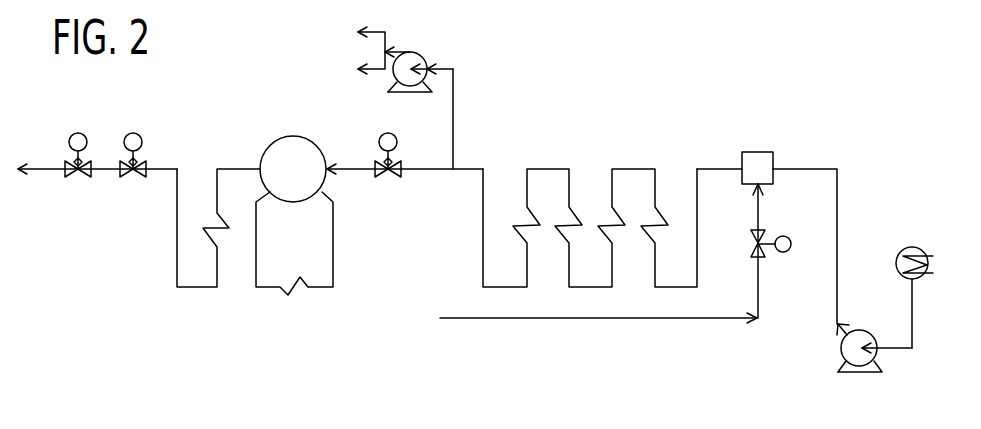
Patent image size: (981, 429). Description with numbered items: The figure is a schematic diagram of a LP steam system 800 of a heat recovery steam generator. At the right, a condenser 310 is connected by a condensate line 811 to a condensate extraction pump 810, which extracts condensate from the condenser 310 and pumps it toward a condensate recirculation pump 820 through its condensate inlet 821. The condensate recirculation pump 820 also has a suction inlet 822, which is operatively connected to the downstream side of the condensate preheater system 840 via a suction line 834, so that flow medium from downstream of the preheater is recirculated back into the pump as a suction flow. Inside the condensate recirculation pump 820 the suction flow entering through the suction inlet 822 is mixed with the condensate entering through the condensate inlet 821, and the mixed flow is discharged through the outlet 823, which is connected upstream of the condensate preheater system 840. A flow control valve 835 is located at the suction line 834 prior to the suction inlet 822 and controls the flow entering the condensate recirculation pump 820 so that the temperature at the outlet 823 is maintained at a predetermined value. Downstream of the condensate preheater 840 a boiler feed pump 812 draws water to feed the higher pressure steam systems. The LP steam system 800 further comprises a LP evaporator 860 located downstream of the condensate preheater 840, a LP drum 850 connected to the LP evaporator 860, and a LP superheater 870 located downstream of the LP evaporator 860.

The LP steam system 800 is at (723, 51).
The condensate extraction pump 810 is at (859, 330).
The condensate line 811 is at (912, 313).
The boiler feed pump 812 is at (423, 55).
The condensate recirculation pump 820 is at (758, 148).
The condensate inlet 821 is at (774, 166).
The suction inlet 822 is at (752, 187).
The outlet 823 is at (741, 167).
The suction line 834 is at (610, 319).
The flow control valve 835 is at (787, 253).
The condensate preheater system 840 is at (585, 159).
The LP drum 850 is at (292, 136).
The LP evaporator 860 is at (297, 296).
The LP superheater 870 is at (195, 296).
The condenser 310 is at (912, 247).